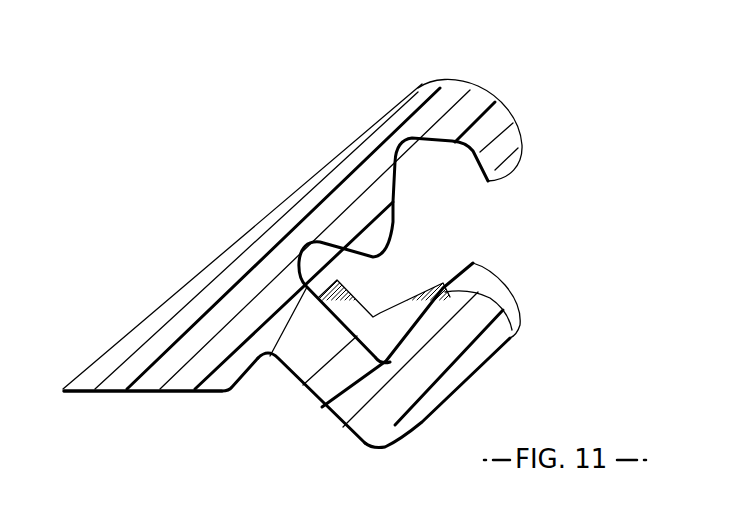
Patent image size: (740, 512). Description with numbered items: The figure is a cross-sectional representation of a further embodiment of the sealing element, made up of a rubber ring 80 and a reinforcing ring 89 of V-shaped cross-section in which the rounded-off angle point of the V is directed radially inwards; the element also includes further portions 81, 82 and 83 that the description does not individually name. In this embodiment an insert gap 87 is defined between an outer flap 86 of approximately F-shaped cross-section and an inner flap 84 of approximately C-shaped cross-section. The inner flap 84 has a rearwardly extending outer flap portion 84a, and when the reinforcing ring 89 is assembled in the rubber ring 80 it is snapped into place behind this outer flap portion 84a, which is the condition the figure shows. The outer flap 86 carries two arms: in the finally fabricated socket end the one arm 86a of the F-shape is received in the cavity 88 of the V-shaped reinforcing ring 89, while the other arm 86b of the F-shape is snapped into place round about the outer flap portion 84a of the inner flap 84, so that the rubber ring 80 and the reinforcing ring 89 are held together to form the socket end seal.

The rubber ring 80 is at (257, 250).
The base edge of strip 81 is at (98, 377).
The bend 82 is at (268, 360).
The lower bend 83 is at (379, 448).
The inner flap 84 is at (502, 300).
The outer flap portion 84a is at (473, 283).
The outer flap 86 is at (378, 138).
The arm of the F-shape 86a is at (332, 200).
The other arm of the F-shape 86b is at (434, 113).
The insert gap 87 is at (383, 263).
The cavity of the V-shape 88 is at (416, 382).
The reinforcing ring 89 is at (388, 330).